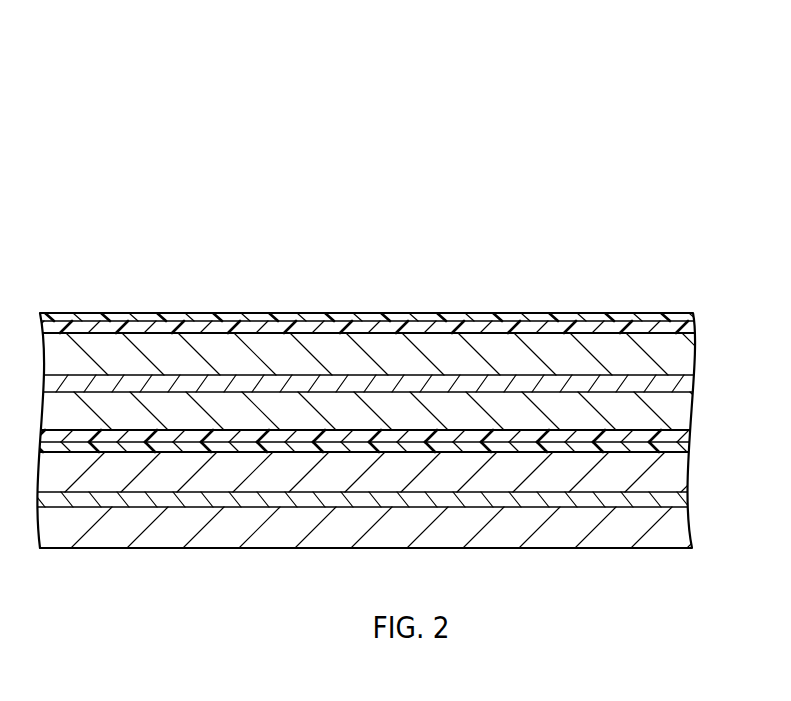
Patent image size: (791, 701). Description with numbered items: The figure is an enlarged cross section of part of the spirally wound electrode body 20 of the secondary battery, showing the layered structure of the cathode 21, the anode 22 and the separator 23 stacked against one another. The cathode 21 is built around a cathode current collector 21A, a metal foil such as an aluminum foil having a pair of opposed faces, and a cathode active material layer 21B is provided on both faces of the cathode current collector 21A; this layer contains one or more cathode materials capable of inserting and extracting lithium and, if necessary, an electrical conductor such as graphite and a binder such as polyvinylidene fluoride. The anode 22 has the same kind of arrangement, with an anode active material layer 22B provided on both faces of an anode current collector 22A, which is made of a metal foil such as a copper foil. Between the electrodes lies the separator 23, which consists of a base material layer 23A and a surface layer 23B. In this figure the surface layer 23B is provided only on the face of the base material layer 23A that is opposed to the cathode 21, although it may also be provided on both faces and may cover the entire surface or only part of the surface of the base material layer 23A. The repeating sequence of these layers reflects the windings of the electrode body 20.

The spirally wound electrode body 20 is at (631, 134).
The cathode 21 is at (70, 226).
The cathode current collector 21A is at (95, 380).
The cathode active material layer 21B is at (175, 407).
The anode 22 is at (300, 226).
The anode current collector 22A is at (320, 504).
The anode active material layer 22B is at (458, 527).
The separator 23 is at (683, 226).
The base material layer 23A is at (577, 447).
The surface layer 23B is at (613, 433).